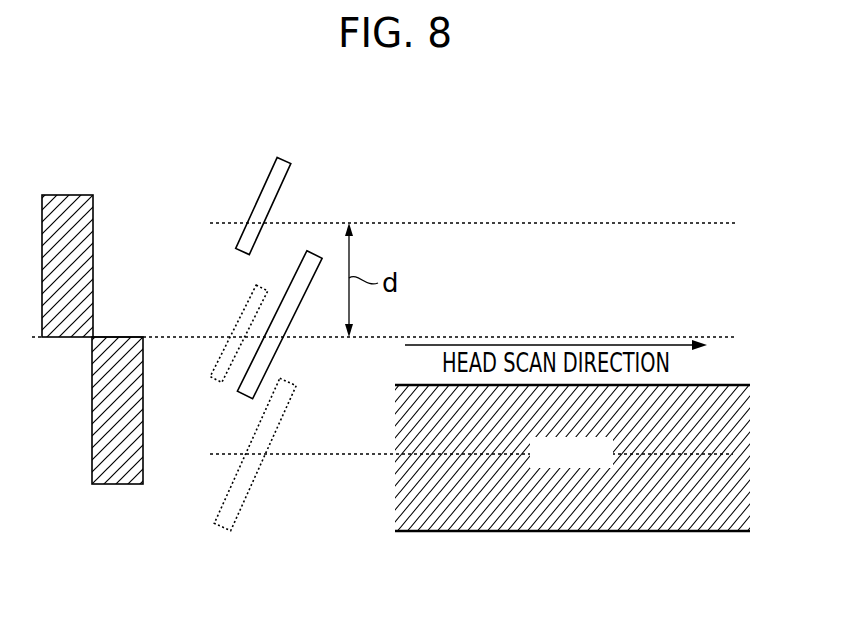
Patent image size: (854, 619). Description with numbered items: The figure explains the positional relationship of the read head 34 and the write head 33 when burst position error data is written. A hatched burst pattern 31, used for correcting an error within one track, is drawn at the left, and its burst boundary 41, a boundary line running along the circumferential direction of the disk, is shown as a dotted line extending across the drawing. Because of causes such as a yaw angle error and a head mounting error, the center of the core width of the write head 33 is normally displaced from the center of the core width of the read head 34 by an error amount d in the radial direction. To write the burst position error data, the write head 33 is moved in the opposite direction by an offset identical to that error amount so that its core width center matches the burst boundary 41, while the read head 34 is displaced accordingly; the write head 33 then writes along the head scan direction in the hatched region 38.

The burst pattern 31 is at (93, 500).
The write head 33 is at (278, 352).
The read head 34 is at (290, 163).
The region 38 is at (748, 508).
The burst boundary 41 is at (119, 336).